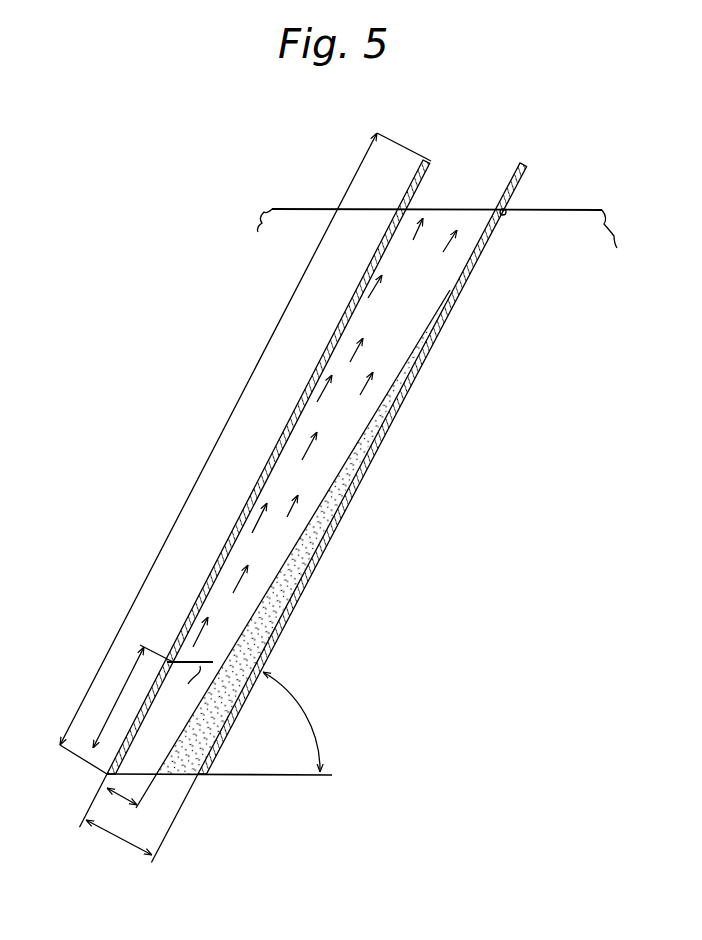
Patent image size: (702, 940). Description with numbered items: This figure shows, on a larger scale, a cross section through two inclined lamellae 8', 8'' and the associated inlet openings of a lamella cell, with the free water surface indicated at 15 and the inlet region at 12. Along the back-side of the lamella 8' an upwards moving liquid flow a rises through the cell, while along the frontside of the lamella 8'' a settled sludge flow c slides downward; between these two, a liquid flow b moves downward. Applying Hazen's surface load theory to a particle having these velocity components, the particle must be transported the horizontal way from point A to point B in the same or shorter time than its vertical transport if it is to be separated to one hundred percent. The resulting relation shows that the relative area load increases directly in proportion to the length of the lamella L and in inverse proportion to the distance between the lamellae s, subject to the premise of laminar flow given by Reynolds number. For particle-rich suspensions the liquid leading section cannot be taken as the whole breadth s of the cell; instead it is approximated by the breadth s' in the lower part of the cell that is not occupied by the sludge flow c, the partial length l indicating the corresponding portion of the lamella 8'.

The liquid surface level 15 is at (538, 210).
The lamella 8' is at (268, 467).
The lamella 8'' is at (362, 468).
The upwards moving liquid flow a is at (385, 303).
The liquid flow b is at (353, 450).
The settled sludge flow c is at (303, 550).
The length of the lamella L is at (222, 440).
The partial plate length l is at (125, 691).
The point A is at (107, 774).
The breadth of the lamella cell not taken up by sludge flow s' is at (116, 806).
The distance between the lamellae s is at (142, 821).
The inlet channel region 12 is at (150, 745).
The point B is at (503, 215).